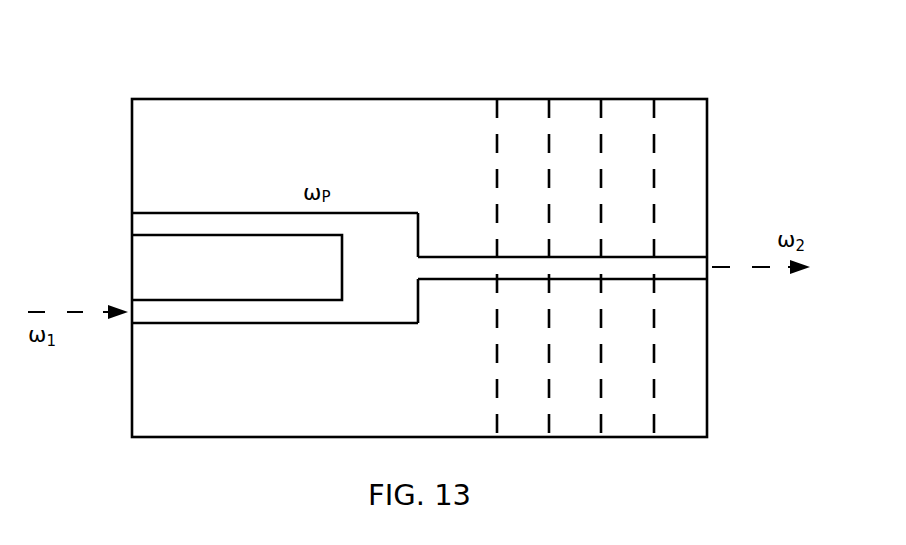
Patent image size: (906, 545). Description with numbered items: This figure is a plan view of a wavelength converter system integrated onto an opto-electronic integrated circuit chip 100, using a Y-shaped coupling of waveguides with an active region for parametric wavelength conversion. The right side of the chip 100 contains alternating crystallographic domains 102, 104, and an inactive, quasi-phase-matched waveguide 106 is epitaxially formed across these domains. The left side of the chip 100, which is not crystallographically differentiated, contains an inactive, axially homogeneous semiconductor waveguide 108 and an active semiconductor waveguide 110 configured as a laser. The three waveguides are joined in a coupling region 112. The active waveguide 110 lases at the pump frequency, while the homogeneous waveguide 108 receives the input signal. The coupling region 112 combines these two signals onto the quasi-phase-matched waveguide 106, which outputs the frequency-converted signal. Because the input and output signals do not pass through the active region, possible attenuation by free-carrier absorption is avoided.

The opto-electronic integrated circuit chip 100 is at (437, 105).
The crystallographic domain 102 is at (515, 105).
The crystallographic domain 104 is at (567, 105).
The quasi-phase-matched waveguide 106 is at (677, 262).
The homogeneous semiconductor waveguide 108 is at (158, 307).
The active semiconductor waveguide 110 is at (158, 220).
The coupling region 112 is at (378, 222).